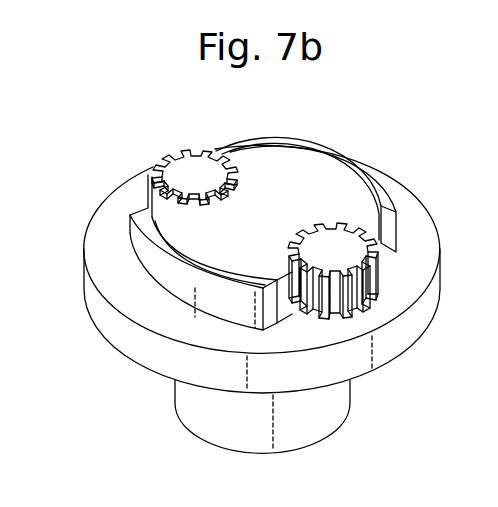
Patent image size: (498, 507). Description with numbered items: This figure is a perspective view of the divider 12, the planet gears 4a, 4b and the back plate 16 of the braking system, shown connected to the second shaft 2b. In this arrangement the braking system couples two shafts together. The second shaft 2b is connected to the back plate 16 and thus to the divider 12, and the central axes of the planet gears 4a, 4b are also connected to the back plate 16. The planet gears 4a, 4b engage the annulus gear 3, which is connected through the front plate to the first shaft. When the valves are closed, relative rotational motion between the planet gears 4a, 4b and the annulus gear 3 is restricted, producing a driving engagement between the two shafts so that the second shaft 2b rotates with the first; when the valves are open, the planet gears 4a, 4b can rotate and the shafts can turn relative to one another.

The annulus gear 3 is at (115, 218).
The back plate 16 is at (121, 335).
The second shaft 2b is at (197, 408).
The divider 12 is at (327, 181).
The planet gear 4a is at (191, 176).
The planet gear 4b is at (338, 264).